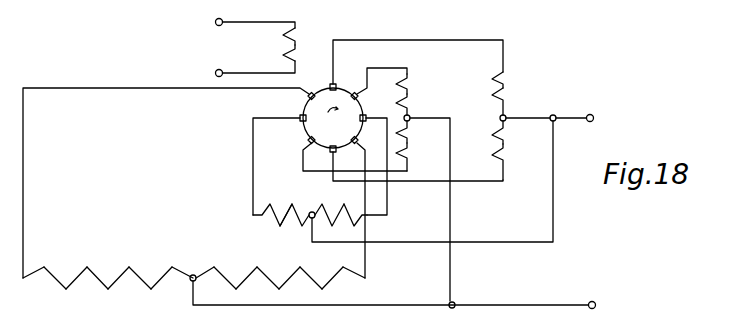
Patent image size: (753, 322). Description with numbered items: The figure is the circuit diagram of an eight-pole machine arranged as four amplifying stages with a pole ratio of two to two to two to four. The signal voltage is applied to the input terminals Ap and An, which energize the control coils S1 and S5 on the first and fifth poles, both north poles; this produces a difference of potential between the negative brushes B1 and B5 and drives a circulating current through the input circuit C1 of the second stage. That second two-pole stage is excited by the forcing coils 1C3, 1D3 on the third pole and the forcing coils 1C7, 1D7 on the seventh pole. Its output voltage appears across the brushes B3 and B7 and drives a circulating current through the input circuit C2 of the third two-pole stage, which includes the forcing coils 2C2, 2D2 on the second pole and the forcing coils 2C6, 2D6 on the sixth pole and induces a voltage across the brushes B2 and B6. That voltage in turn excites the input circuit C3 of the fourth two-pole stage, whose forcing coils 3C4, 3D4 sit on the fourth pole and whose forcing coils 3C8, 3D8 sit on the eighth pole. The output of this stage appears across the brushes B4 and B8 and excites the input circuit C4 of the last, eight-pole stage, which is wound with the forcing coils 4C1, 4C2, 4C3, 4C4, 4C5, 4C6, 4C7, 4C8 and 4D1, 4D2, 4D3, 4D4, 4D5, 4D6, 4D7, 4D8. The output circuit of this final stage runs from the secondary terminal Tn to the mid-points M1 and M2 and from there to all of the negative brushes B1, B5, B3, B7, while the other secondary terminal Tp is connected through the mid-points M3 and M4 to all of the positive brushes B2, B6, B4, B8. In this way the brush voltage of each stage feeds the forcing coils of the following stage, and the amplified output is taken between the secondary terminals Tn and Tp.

The input terminal Ap is at (241, 22).
The input terminal An is at (241, 71).
The control coil S1 is at (275, 36).
The control coil S5 is at (275, 55).
The input circuit of the second stage C1 is at (406, 40).
The forcing coil 1C3 is at (520, 76).
The forcing coil 1C7 is at (520, 100).
The mid-point M1 is at (519, 112).
The forcing coil 1D3 is at (519, 132).
The forcing coil 1D7 is at (520, 162).
The secondary terminal Tn is at (601, 119).
The secondary terminal Tp is at (604, 306).
The input circuit of the fourth two-pole stage C3 is at (405, 68).
The forcing coil 3C4 is at (389, 84).
The forcing coil 3C8 is at (389, 104).
The mid-point M3 is at (427, 202).
The forcing coil 3D4 is at (421, 132).
The forcing coil 3D8 is at (420, 158).
The negative brush B1 is at (329, 98).
The positive brush B2 is at (353, 87).
The negative brush B3 is at (352, 119).
The positive brush B4 is at (366, 138).
The negative brush B5 is at (332, 141).
The positive brush B6 is at (295, 147).
The negative brush B7 is at (288, 127).
The positive brush B8 is at (296, 101).
The input circuit of the third two-pole stage C2 is at (253, 171).
The forcing coil 2C2 is at (272, 205).
The forcing coil 2C6 is at (284, 225).
The mid-point M2 is at (424, 181).
The forcing coil 2D2 is at (333, 205).
The forcing coil 2D6 is at (343, 225).
The input circuit of the last stage C4 is at (23, 184).
The mid-point M4 is at (385, 281).
The forcing coil 4C1 is at (30, 288).
The forcing coil 4C2 is at (47, 270).
The forcing coil 4C3 is at (72, 288).
The forcing coil 4C4 is at (88, 270).
The forcing coil 4C5 is at (117, 288).
The forcing coil 4C6 is at (128, 270).
The forcing coil 4C7 is at (159, 288).
The forcing coil 4C8 is at (169, 264).
The forcing coil 4D1 is at (212, 288).
The forcing coil 4D2 is at (225, 270).
The forcing coil 4D3 is at (253, 288).
The forcing coil 4D4 is at (264, 270).
The forcing coil 4D5 is at (296, 288).
The forcing coil 4D6 is at (304, 270).
The forcing coil 4D7 is at (340, 288).
The forcing coil 4D8 is at (346, 264).